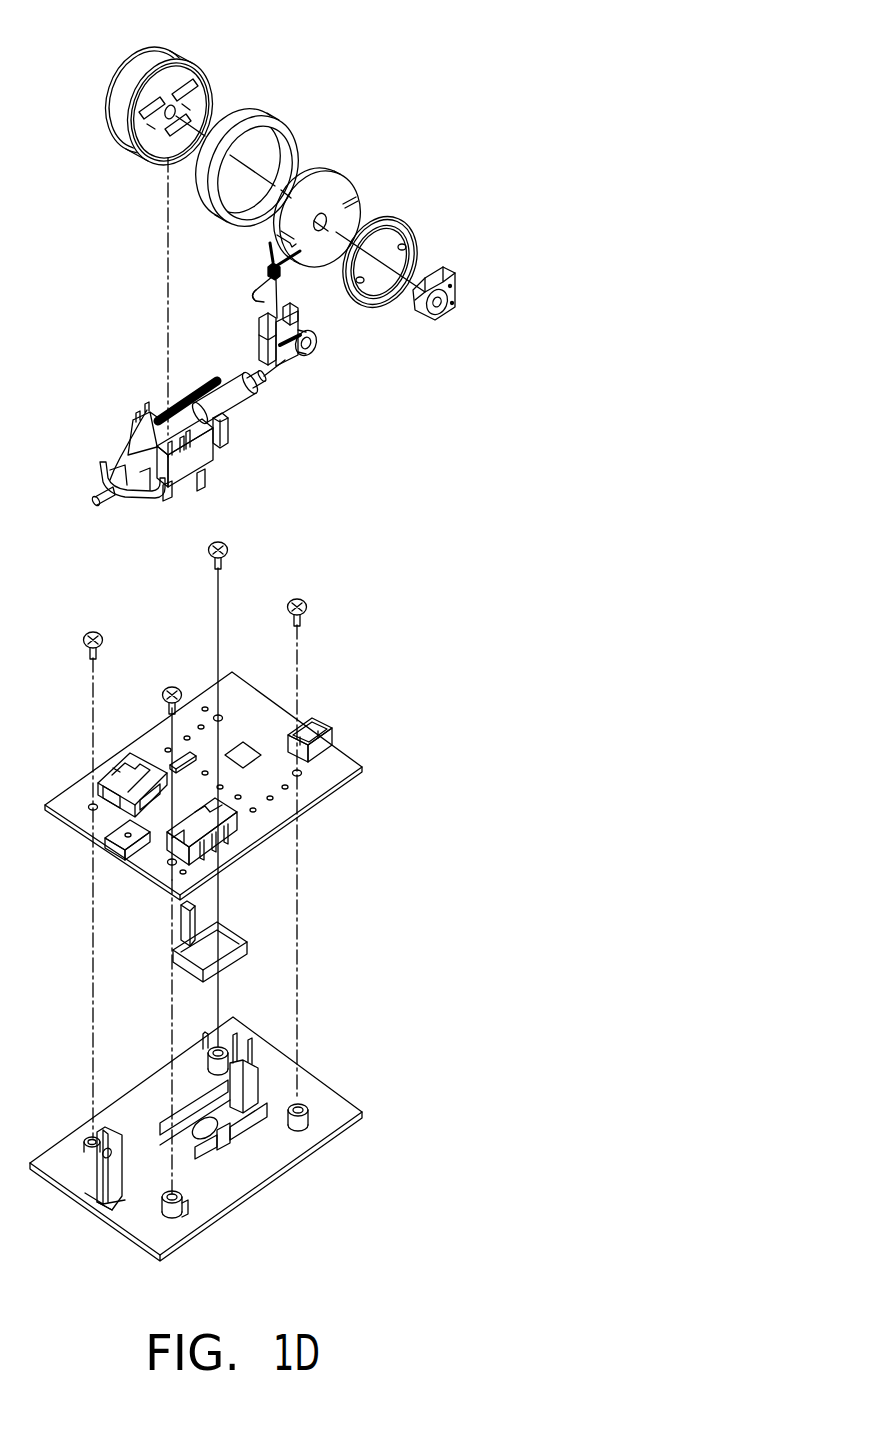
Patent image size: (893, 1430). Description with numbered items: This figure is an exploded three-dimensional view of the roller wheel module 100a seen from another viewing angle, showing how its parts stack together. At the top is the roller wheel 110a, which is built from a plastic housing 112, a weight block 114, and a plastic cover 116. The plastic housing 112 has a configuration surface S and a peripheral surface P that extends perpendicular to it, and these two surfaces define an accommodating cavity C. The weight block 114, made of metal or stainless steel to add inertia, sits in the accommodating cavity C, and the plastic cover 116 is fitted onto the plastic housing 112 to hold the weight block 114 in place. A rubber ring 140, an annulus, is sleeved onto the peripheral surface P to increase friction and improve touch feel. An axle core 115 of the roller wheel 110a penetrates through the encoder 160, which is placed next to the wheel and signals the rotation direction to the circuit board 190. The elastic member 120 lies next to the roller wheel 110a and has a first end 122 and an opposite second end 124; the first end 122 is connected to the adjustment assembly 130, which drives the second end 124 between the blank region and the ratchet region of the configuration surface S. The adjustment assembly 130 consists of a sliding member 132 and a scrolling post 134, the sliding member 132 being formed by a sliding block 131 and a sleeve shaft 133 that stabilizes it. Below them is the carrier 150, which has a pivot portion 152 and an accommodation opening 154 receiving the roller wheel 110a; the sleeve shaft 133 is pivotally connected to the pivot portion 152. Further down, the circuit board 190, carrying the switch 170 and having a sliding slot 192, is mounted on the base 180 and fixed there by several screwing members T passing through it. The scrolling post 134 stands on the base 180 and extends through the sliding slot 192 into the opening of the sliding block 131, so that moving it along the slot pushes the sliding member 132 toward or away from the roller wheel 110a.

The roller wheel module 100a is at (518, 1245).
The roller wheel 110a is at (327, 162).
The plastic housing 112 is at (170, 70).
The weight block 114 is at (340, 190).
The plastic cover 116 is at (412, 242).
The axle core 115 is at (188, 128).
The peripheral surface P is at (150, 68).
The accommodating cavity C is at (185, 114).
The configuration surface S is at (158, 131).
The elastic member 120 is at (268, 280).
The first end 122 is at (269, 256).
The second end 124 is at (252, 306).
The adjustment assembly 130 is at (313, 642).
The sliding block 131 is at (262, 358).
The sliding member 132 is at (404, 398).
The sleeve shaft 133 is at (318, 341).
The scrolling post 134 is at (190, 918).
The rubber ring 140 is at (265, 125).
The carrier 150 is at (150, 488).
The pivot portion 152 is at (230, 403).
The accommodation opening 154 is at (122, 462).
The encoder 160 is at (457, 296).
The switch 170 is at (140, 772).
The base 180 is at (322, 1105).
The circuit board 190 is at (322, 777).
The sliding slot 192 is at (180, 758).
The screwing members T is at (226, 546).